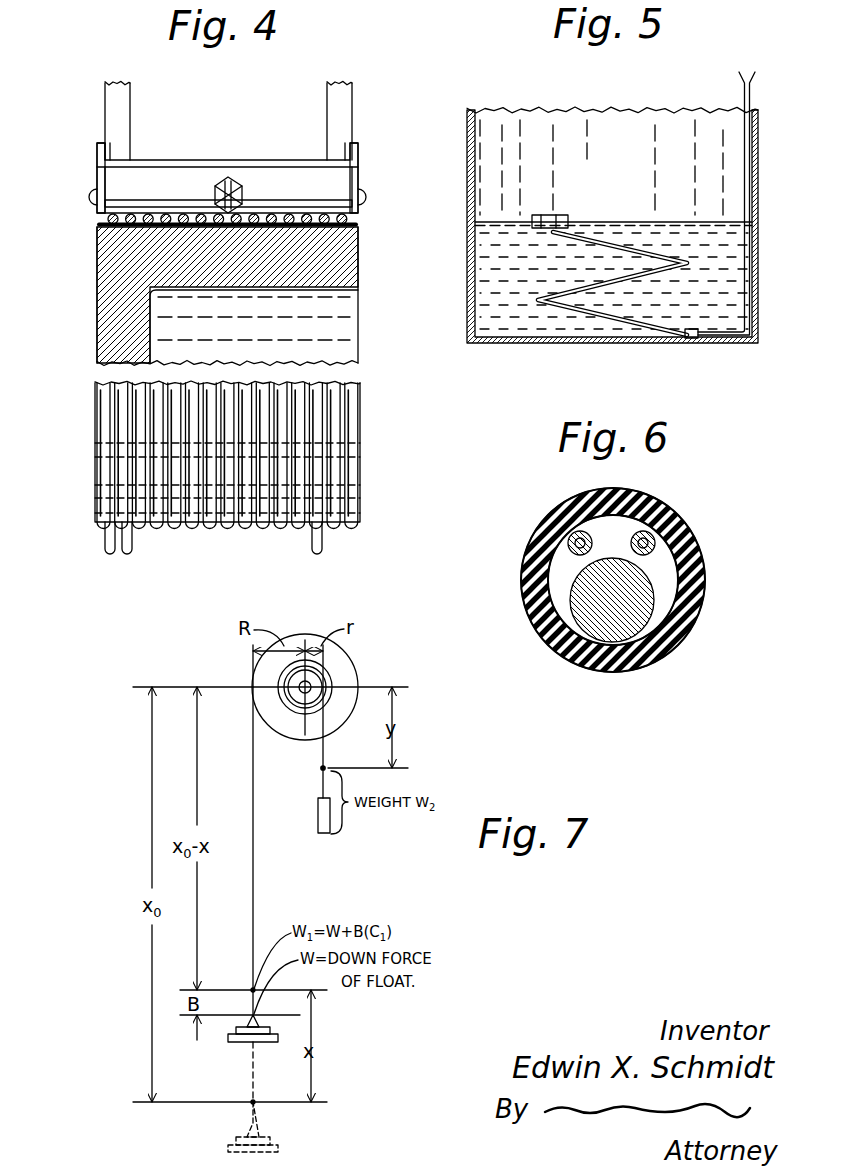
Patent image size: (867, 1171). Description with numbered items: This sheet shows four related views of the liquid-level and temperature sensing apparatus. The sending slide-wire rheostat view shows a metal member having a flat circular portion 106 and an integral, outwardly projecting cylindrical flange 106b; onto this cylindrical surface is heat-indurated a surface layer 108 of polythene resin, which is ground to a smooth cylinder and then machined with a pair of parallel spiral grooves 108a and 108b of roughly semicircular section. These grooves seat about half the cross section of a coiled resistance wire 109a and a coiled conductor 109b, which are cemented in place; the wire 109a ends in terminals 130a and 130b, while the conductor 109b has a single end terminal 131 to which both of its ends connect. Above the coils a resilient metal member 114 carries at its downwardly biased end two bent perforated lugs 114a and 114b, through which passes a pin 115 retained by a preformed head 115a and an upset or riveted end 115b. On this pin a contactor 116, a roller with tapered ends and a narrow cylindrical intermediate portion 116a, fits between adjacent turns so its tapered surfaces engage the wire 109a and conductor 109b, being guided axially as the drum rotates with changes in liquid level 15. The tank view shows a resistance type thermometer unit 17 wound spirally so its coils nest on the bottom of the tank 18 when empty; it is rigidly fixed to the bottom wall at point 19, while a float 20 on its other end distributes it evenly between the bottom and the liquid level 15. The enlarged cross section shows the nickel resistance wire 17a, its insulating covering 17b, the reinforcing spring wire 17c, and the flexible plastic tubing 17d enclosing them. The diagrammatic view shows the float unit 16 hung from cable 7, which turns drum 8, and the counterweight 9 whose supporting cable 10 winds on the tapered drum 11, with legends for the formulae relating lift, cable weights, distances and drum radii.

In FIG. 4, the flat circular portion 106 is at (115, 342).
In FIG. 4, the cylindrical flange 106b is at (350, 263).
In FIG. 4, the surface layer of synthetic resinous material 108 is at (358, 223).
In FIG. 4, the spiral groove 108a is at (108, 233).
In FIG. 4, the spiral groove 108b is at (147, 232).
In FIG. 4, the coiled resistance wire 109a is at (112, 213).
In FIG. 4, the coiled conductor 109b is at (131, 214).
In FIG. 4, the resilient metal member 114 is at (348, 118).
In FIG. 4, the perforated lug 114a is at (98, 166).
In FIG. 4, the perforated lug 114b is at (358, 167).
In FIG. 4, the pin 115 is at (290, 203).
In FIG. 4, the preformed head 115a is at (93, 199).
In FIG. 4, the upset or riveted end 115b is at (364, 199).
In FIG. 4, the contactor 116 is at (228, 177).
In FIG. 4, the cylindrical intermediate portion 116a is at (236, 205).
In FIG. 4, the end terminal 130a is at (110, 552).
In FIG. 4, the end terminal 130b is at (320, 546).
In FIG. 4, the end terminal 131 is at (132, 550).
In FIG. 5, the liquid level 15 is at (655, 221).
In FIG. 5, the resistance type thermometer unit 17 is at (615, 246).
In FIG. 6, the resistance type thermometer unit 17 is at (705, 574).
In FIG. 5, the resistance wire 17a is at (603, 318).
In FIG. 6, the resistance wire 17a is at (575, 534).
In FIG. 6, the insulating covering 17b is at (572, 546).
In FIG. 5, the reinforcing spring wire 17c is at (651, 332).
In FIG. 6, the reinforcing spring wire 17c is at (650, 600).
In FIG. 5, the flexible plastic tubing 17d is at (568, 310).
In FIG. 6, the flexible plastic tubing 17d is at (670, 630).
In FIG. 5, the tank 18 is at (481, 341).
In FIG. 5, the attachment point 19 is at (693, 340).
In FIG. 5, the float 20 is at (560, 215).
In FIG. 7, the cable 7 is at (258, 863).
In FIG. 7, the drum 8 is at (306, 634).
In FIG. 7, the counterweight 9 is at (324, 833).
In FIG. 7, the supporting cable 10 is at (320, 767).
In FIG. 7, the drum 11 is at (330, 680).
In FIG. 7, the float unit 16 is at (245, 1046).